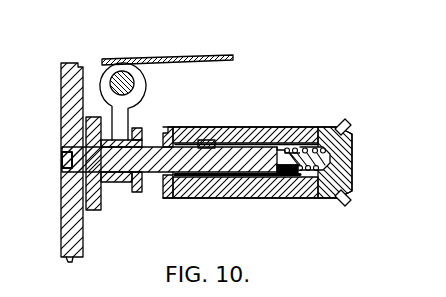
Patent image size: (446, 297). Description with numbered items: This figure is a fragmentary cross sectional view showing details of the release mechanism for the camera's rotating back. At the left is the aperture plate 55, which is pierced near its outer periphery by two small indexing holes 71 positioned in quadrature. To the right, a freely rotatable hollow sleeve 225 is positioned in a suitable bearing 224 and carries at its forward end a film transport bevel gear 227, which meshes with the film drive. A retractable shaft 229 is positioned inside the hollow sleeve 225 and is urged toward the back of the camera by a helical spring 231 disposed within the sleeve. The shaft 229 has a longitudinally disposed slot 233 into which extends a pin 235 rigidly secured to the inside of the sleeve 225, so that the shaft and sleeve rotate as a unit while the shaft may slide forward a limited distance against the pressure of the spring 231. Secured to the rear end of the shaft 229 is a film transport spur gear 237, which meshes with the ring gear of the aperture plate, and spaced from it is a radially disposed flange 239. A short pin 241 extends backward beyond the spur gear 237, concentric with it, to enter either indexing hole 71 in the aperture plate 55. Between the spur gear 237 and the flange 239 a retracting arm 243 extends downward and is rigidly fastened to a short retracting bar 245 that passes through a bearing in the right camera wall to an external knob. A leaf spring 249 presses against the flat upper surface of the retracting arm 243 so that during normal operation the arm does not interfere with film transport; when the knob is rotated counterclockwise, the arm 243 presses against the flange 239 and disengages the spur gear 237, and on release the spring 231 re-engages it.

The aperture plate 55 is at (70, 80).
The indexing holes 71 is at (63, 162).
The bearing 224 is at (262, 199).
The hollow sleeve 225 is at (169, 128).
The film transport bevel gear 227 is at (343, 206).
The retractable shaft 229 is at (162, 135).
The helical spring 231 is at (303, 194).
The slot 233 is at (194, 150).
The pin 235 is at (218, 143).
The film transport spur gear 237 is at (86, 131).
The flange 239 is at (138, 192).
The short pin 241 is at (72, 173).
The retracting arm 243 is at (128, 110).
The retracting bar 245 is at (133, 80).
The leaf spring 249 is at (137, 59).